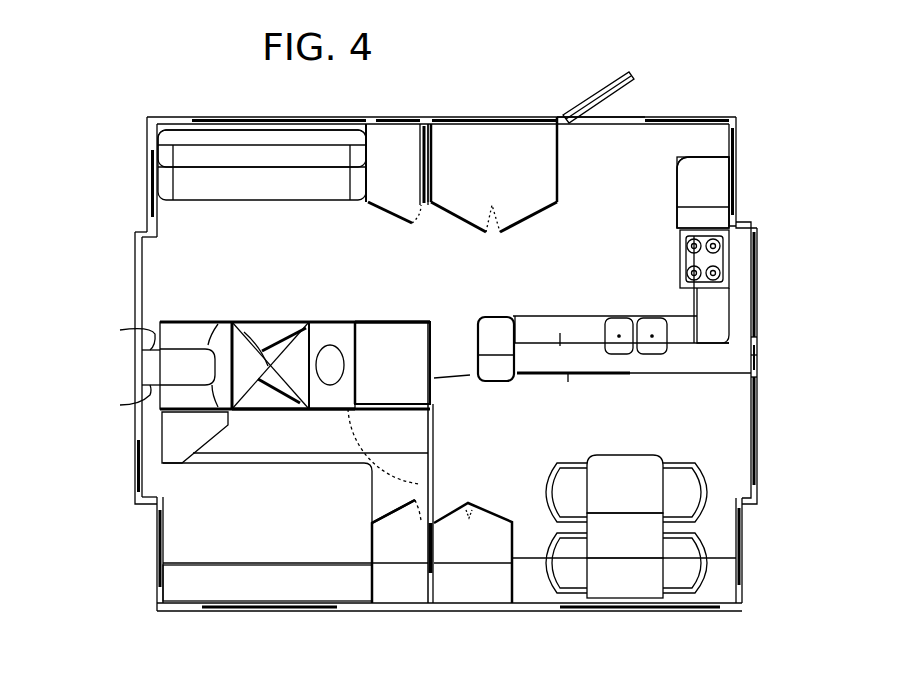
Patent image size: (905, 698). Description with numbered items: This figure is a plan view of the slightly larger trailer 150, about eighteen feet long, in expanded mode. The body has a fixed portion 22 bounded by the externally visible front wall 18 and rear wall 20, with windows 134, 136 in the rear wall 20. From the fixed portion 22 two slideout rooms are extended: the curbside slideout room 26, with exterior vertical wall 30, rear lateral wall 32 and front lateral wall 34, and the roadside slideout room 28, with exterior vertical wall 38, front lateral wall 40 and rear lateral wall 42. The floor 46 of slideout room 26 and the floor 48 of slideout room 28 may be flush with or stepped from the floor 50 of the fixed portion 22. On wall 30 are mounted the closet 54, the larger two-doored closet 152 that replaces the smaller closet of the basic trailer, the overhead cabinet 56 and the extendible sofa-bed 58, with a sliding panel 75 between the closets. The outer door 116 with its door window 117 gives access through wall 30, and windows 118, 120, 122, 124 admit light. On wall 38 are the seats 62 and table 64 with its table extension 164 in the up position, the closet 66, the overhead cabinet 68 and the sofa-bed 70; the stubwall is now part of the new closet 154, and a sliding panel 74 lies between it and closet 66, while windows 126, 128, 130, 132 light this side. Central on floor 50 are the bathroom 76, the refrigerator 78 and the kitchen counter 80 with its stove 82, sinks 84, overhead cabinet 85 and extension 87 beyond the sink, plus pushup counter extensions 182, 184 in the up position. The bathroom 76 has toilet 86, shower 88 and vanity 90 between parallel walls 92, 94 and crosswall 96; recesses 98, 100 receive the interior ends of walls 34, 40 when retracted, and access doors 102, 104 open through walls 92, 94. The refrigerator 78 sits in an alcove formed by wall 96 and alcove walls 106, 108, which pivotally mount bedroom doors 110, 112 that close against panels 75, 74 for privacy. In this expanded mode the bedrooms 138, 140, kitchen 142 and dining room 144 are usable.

The front wall 18 is at (134, 305).
The rear wall 20 is at (759, 353).
The fixed portion 22 is at (776, 384).
The curbside slideout room 26 is at (478, 112).
The roadside slideout room 28 is at (422, 620).
The exterior vertical wall 30 is at (418, 119).
The rear lateral wall 32 is at (740, 223).
The front lateral wall 34 is at (122, 233).
The exterior vertical wall 38 is at (448, 640).
The front lateral wall 40 is at (154, 510).
The rear lateral wall 42 is at (746, 502).
The floor 46 is at (672, 172).
The floor 48 is at (543, 521).
The floor 50 is at (452, 362).
The closet 54 is at (410, 184).
The overhead cabinet 56 is at (292, 151).
The sofa-bed 58 is at (297, 187).
The seats 62 is at (578, 504).
The table 64 is at (646, 547).
The closet 66 is at (413, 569).
The overhead cabinet 68 is at (295, 592).
The sofa-bed 70 is at (318, 516).
The sliding panel 74 is at (434, 499).
The sliding panel 75 is at (432, 158).
The bathroom 76 is at (158, 375).
The refrigerator 78 is at (408, 378).
The kitchen counter 80 is at (647, 208).
The stove 82 is at (675, 192).
The sinks 84 is at (620, 330).
The overhead cabinet 85 is at (727, 363).
The toilet 86 is at (205, 381).
The counter extension 87 is at (559, 340).
The shower 88 is at (270, 365).
The vanity 90 is at (340, 373).
The bathroom wall 92 is at (213, 335).
The bathroom wall 94 is at (222, 395).
The crosswall 96 is at (392, 341).
The recess 98 is at (110, 345).
The recess 100 is at (108, 404).
The access door 102 is at (277, 331).
The access door 104 is at (280, 407).
The alcove wall 106 is at (392, 328).
The alcove wall 108 is at (373, 409).
The bedroom door 110 is at (383, 319).
The bedroom door 112 is at (434, 447).
The outer door 116 is at (634, 75).
The door window 117 is at (597, 82).
The window 118 is at (146, 178).
The window 120 is at (246, 125).
The window 122 is at (686, 114).
The window 124 is at (738, 165).
The window 126 is at (744, 538).
The window 128 is at (612, 612).
The window 130 is at (253, 616).
The window 132 is at (156, 558).
The window 134 is at (759, 290).
The window 136 is at (759, 429).
The bedroom 138 is at (324, 448).
The bedroom 140 is at (325, 252).
The kitchen 142 is at (630, 255).
The dining room 144 is at (735, 456).
The trailer 150 is at (776, 323).
The two-doored closet 152 is at (530, 185).
The closet 154 is at (493, 556).
The table extension 164 is at (650, 504).
The pushup counter extension 182 is at (724, 200).
The pushup counter extension 184 is at (507, 355).